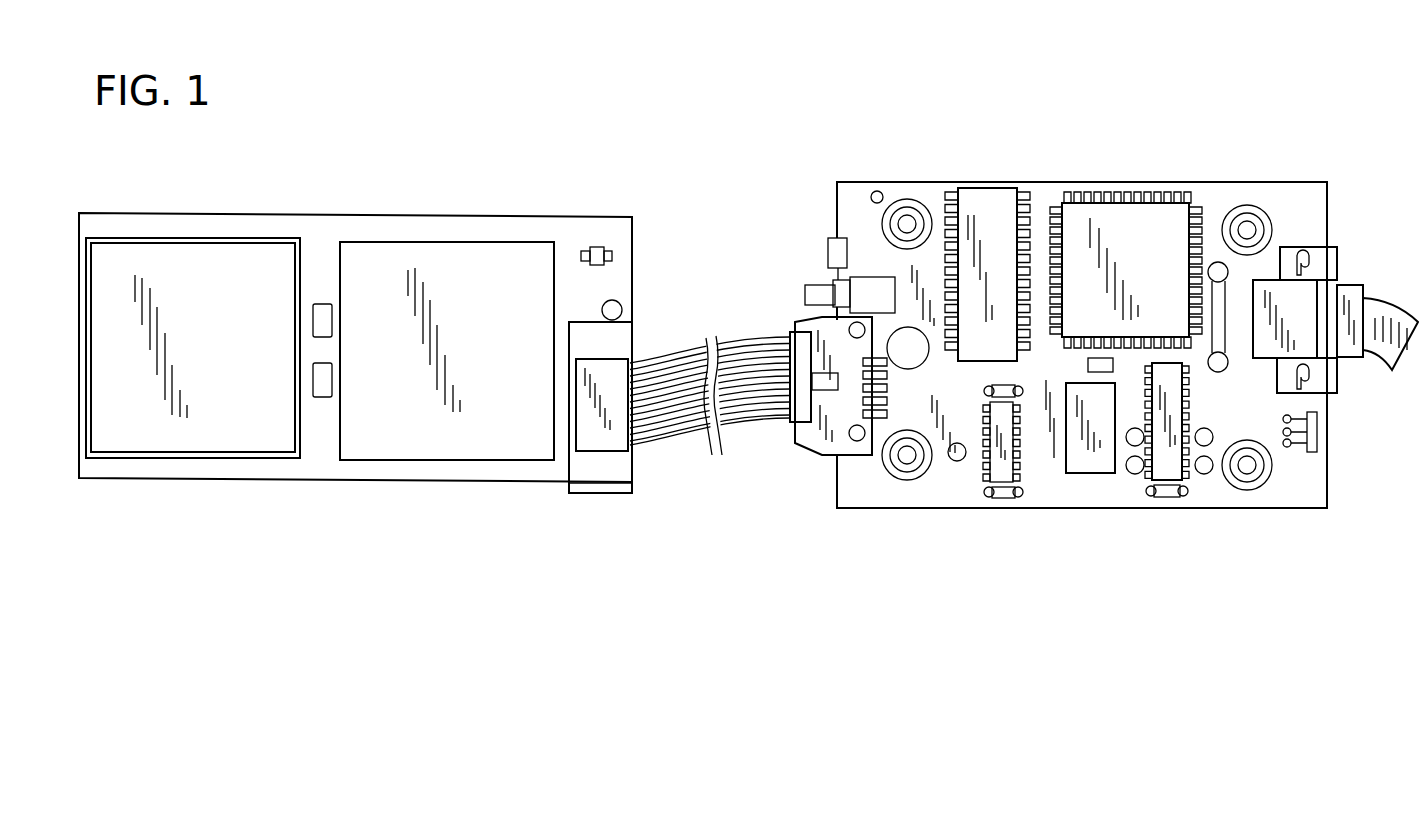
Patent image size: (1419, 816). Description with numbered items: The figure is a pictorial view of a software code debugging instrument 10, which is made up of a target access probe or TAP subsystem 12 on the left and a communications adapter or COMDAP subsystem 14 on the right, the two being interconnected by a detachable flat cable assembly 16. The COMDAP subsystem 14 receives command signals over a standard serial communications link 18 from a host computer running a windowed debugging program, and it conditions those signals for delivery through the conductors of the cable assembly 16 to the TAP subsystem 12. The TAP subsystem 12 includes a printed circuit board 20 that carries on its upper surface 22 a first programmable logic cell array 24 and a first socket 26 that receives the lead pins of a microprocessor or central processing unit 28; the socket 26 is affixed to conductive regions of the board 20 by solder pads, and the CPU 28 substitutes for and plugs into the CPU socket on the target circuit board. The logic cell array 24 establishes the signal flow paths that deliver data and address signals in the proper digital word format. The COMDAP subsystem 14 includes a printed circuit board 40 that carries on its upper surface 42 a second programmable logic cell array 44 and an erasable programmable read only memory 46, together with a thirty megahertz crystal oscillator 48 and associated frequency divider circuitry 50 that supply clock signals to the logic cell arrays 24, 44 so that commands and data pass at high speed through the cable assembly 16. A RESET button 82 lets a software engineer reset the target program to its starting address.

The software code debugging instrument 10 is at (608, 634).
The target access probe subsystem 12 is at (318, 490).
The communications adapter subsystem 14 is at (1101, 337).
The flat cable assembly 16 is at (692, 345).
The RS-232 serial communications link 18 is at (1392, 300).
The printed circuit board 20 is at (240, 212).
The upper surface 22 is at (400, 232).
The first programmable logic cell array 24 is at (450, 430).
The first socket 26 is at (177, 458).
The central processing unit 28 is at (227, 430).
The printed circuit board 40 is at (933, 183).
The upper surface 42 is at (1047, 485).
The second programmable logic cell array 44 is at (1128, 235).
The erasable programmable read only memory 46 is at (990, 205).
The crystal oscillator 48 is at (1092, 457).
The frequency divider circuitry 50 is at (1195, 497).
The RESET button 82 is at (818, 287).